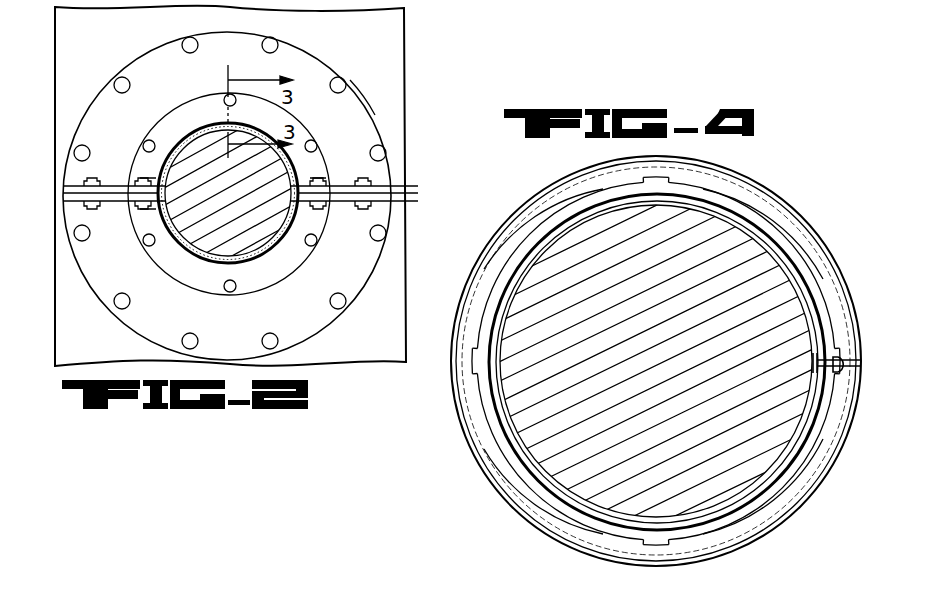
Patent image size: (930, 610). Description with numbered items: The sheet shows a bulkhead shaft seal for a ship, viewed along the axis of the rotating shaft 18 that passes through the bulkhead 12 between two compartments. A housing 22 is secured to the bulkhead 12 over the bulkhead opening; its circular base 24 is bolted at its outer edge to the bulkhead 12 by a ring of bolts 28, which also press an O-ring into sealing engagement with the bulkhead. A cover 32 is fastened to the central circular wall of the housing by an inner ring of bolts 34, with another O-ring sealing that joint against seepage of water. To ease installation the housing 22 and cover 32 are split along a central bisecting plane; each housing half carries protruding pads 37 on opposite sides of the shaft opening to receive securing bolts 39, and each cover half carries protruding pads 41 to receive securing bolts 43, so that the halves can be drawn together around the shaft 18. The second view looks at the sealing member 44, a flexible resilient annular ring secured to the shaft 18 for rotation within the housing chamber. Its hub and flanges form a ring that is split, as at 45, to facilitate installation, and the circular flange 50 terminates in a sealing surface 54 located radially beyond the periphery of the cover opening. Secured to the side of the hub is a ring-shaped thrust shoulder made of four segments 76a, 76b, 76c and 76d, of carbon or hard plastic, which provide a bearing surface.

In FIG. 2, the bulkhead 12 is at (398, 38).
In FIG. 2, the rotating shaft 18 is at (254, 244).
In FIG. 4, the rotating shaft 18 is at (540, 460).
In FIG. 2, the housing 22 is at (386, 101).
In FIG. 2, the circular base 24 is at (357, 101).
In FIG. 2, the bolts 28 is at (128, 82).
In FIG. 2, the cover 32 is at (193, 106).
In FIG. 2, the bolts 34 is at (314, 141).
In FIG. 2, the protruding pads 37 is at (108, 185).
In FIG. 2, the securing bolts 39 is at (93, 177).
In FIG. 2, the protruding pads 41 is at (168, 193).
In FIG. 2, the securing bolts 43 is at (320, 176).
In FIG. 4, the sealing member 44 is at (466, 452).
In FIG. 4, the split 45 is at (822, 371).
In FIG. 4, the circular flange 50 is at (512, 487).
In FIG. 4, the sealing surface 54 is at (508, 506).
In FIG. 4, the thrust shoulder segment 76a is at (566, 212).
In FIG. 4, the thrust shoulder segment 76b is at (724, 202).
In FIG. 4, the thrust shoulder segment 76c is at (756, 510).
In FIG. 4, the thrust shoulder segment 76d is at (580, 533).